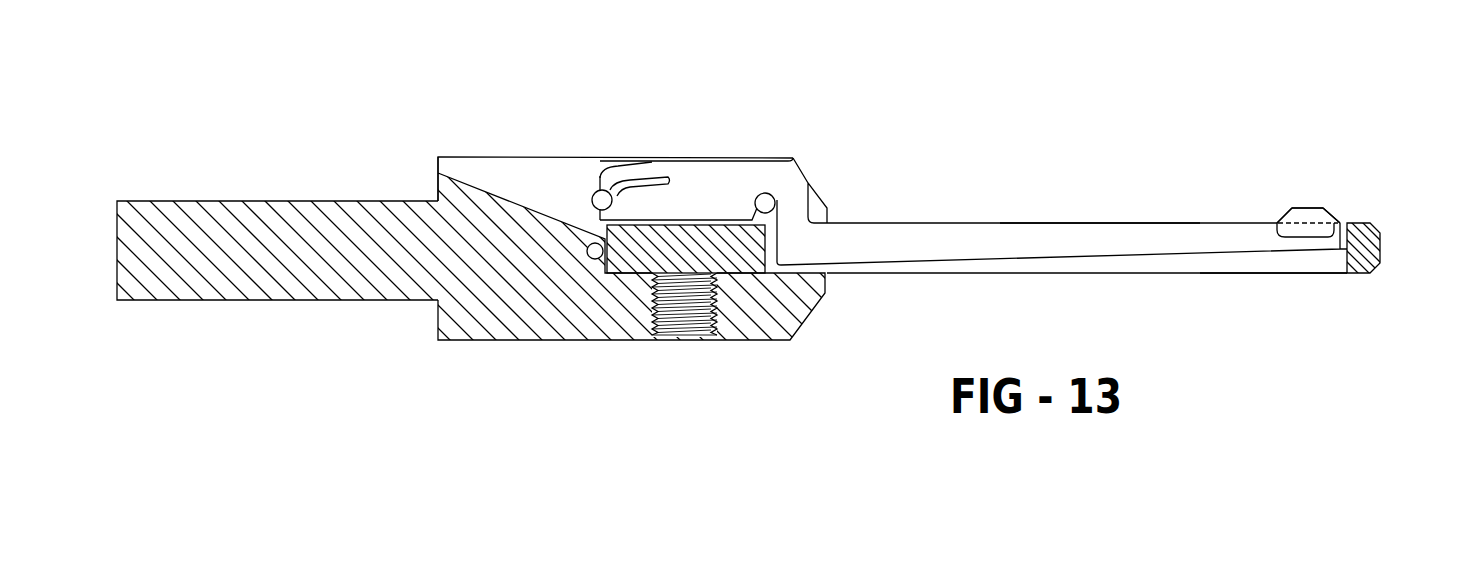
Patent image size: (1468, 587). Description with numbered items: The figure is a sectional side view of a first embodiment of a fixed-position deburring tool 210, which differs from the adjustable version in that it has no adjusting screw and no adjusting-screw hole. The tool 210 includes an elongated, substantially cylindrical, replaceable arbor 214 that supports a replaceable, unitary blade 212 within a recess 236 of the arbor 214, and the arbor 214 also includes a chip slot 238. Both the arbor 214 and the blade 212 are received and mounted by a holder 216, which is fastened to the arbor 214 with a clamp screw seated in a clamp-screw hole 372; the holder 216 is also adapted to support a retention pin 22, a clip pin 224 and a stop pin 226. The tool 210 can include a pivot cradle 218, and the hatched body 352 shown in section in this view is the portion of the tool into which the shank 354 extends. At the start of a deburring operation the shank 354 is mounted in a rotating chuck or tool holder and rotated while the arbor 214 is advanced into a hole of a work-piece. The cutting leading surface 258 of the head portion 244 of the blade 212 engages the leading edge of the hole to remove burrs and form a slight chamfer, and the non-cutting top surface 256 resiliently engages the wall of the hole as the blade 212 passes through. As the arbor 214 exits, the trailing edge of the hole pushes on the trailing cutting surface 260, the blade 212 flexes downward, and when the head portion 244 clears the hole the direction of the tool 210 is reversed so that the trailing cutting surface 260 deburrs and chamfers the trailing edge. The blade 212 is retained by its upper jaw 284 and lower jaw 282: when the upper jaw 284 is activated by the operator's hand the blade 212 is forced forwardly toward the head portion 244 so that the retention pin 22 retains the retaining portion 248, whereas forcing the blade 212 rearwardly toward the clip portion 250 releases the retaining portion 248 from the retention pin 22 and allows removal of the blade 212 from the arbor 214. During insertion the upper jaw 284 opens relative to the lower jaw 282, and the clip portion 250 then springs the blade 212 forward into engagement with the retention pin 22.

The fixed-position deburring tool 210 is at (396, 124).
The blade 212 is at (1214, 222).
The arbor 214 is at (1278, 278).
The holder 216 is at (657, 149).
The pivot cradle 218 is at (734, 170).
The retention pin 22 is at (778, 200).
The clip pin 224 is at (594, 192).
The stop pin 226 is at (587, 255).
The recess 236 is at (1078, 224).
The chip slot 238 is at (1383, 265).
The head portion 244 is at (1305, 206).
The retaining portion 248 is at (768, 188).
The clip portion 250 is at (680, 173).
The non-cutting top surface 256 is at (1320, 207).
The cutting leading surface 258 is at (1330, 208).
The trailing cutting surface 260 is at (1283, 223).
The lower jaw 282 is at (624, 212).
The upper jaw 284 is at (617, 168).
The housing 352 is at (580, 342).
The shank 354 is at (288, 303).
The clamp-screw hole 372 is at (702, 336).